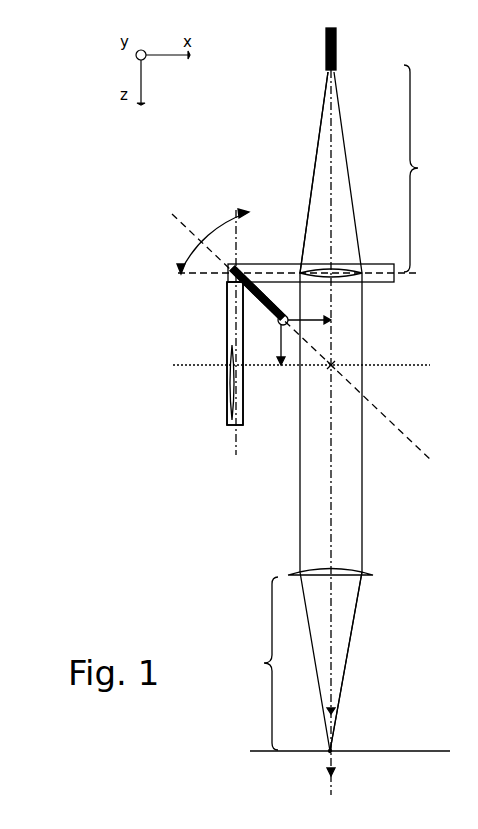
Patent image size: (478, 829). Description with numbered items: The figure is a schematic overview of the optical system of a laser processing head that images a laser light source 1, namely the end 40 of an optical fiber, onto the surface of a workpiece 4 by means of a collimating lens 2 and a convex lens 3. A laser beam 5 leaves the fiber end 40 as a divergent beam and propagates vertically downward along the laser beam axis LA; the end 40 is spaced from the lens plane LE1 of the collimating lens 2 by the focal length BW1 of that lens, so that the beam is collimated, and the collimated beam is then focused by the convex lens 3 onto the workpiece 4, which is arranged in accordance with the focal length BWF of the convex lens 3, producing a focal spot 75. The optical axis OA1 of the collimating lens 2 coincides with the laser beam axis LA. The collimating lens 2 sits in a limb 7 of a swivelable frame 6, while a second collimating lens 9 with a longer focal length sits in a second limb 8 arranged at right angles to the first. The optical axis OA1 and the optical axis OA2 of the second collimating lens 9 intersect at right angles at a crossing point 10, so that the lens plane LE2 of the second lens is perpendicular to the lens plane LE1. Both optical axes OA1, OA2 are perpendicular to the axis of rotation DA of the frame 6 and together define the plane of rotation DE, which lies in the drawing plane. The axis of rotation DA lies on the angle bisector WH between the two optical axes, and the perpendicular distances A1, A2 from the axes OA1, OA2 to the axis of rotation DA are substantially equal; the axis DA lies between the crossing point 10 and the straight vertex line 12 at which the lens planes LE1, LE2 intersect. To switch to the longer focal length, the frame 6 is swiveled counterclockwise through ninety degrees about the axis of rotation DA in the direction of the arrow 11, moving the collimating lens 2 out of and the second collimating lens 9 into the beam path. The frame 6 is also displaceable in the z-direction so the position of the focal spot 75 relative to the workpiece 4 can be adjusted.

The laser light source 1 is at (320, 68).
The end of the optical fiber 40 is at (340, 74).
The laser beam axis LA is at (333, 138).
The laser beam 5 is at (311, 190).
The focal length of the collimating lens BW1 is at (430, 168).
The limb 7 is at (377, 265).
The lens plane LE1 is at (313, 270).
The collimating lens 2 is at (345, 281).
The plane of rotation DE is at (245, 526).
The straight vertex line 12 is at (238, 264).
The axis of rotation DA is at (282, 314).
The arrow 11 is at (213, 238).
The angle bisector WH is at (302, 338).
The distance A1 is at (309, 311).
The distance A2 is at (268, 345).
The optical axis of the collimating lens OA1 is at (330, 440).
The optical axis of the second collimating lens OA2 is at (301, 332).
The crossing point 10 is at (335, 363).
The frame 6 is at (220, 323).
The limb 8 is at (230, 416).
The lens plane LE2 is at (247, 372).
The second collimating lens 9 is at (230, 382).
The convex lens 3 is at (345, 572).
The focal length of the convex lens BWF is at (245, 663).
The workpiece 4 is at (308, 750).
The focal spot 75 is at (333, 749).